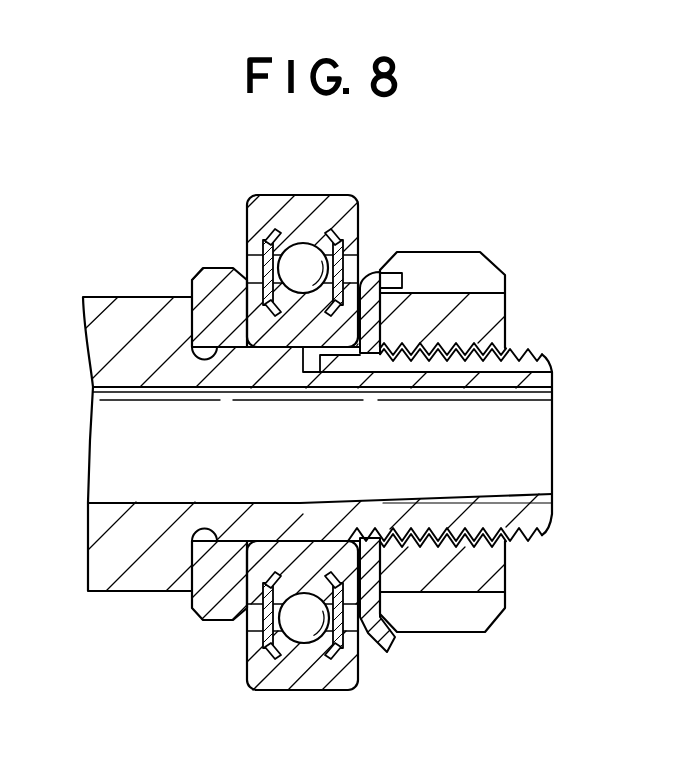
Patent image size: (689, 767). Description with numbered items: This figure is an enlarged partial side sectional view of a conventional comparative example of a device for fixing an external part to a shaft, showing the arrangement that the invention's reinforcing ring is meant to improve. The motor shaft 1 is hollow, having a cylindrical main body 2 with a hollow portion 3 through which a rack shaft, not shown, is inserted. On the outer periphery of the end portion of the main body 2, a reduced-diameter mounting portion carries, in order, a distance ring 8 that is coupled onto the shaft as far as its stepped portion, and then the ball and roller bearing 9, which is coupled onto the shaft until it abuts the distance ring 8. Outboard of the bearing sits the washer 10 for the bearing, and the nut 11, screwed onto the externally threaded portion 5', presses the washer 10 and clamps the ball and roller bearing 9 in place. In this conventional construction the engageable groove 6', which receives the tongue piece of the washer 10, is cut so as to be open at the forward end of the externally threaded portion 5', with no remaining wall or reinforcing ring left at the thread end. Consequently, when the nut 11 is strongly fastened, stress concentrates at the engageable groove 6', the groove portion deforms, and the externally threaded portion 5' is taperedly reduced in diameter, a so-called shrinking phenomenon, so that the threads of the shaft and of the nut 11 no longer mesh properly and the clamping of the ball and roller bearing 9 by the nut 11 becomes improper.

The motor shaft 1 is at (141, 295).
The main body 2 is at (100, 295).
The hollow portion 3 is at (93, 400).
The externally threaded portion 5' is at (461, 556).
The engageable groove 6' is at (481, 330).
The distance ring 8 is at (221, 265).
The ball and roller bearing 9 is at (318, 194).
The washer for a bearing 10 is at (378, 266).
The nut 11 is at (510, 271).